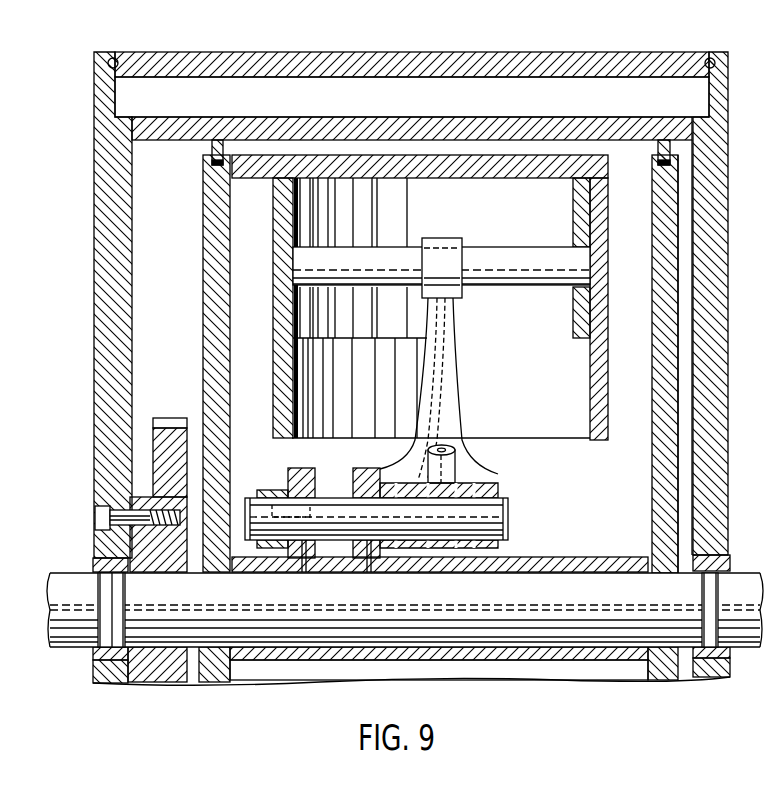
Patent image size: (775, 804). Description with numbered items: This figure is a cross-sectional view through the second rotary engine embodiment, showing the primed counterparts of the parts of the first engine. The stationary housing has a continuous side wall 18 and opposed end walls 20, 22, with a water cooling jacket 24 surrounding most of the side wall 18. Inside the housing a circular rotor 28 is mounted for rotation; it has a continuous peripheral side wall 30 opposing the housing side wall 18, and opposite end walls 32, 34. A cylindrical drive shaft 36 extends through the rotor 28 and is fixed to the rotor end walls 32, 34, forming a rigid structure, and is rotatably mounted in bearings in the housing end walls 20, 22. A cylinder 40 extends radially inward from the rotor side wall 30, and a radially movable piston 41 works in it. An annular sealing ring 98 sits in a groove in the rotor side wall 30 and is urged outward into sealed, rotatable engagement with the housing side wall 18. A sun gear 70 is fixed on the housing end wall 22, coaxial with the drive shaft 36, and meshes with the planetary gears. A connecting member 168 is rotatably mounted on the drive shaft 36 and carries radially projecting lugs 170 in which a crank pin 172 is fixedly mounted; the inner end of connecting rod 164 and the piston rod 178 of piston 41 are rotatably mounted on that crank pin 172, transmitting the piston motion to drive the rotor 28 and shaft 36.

The water cooling jacket 24 is at (516, 84).
The housing end wall 22 is at (96, 271).
The housing end wall 20 is at (718, 205).
The housing side wall 18 is at (485, 121).
The rotor end wall 34 is at (203, 270).
The rotor side wall 30 is at (258, 152).
The annular sealing ring 98 is at (666, 141).
The rotor 28 is at (682, 271).
The rotor end wall 32 is at (682, 298).
The cylinder 40 is at (441, 297).
The piston 41 is at (503, 172).
The piston rod 178 is at (462, 411).
The crank pin 172 is at (500, 508).
The lug 170 is at (352, 483).
The connecting rod 164 is at (262, 492).
The connecting member 168 is at (598, 560).
The sun gear 70 is at (168, 427).
The drive shaft 36 is at (741, 573).